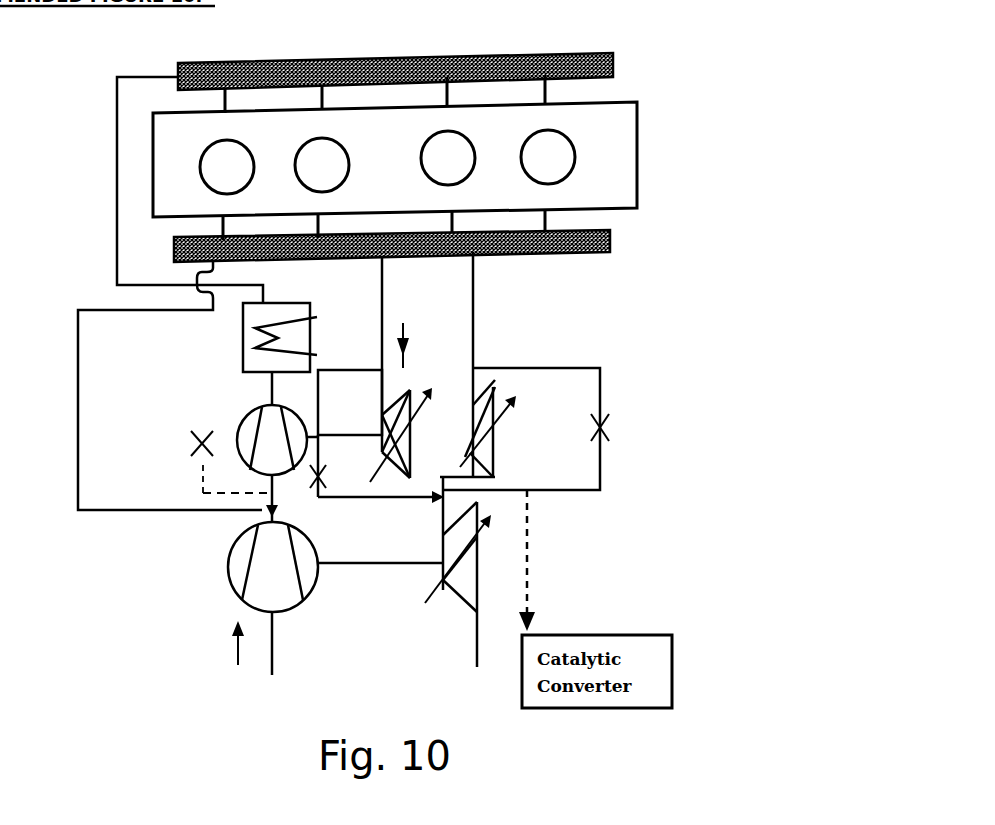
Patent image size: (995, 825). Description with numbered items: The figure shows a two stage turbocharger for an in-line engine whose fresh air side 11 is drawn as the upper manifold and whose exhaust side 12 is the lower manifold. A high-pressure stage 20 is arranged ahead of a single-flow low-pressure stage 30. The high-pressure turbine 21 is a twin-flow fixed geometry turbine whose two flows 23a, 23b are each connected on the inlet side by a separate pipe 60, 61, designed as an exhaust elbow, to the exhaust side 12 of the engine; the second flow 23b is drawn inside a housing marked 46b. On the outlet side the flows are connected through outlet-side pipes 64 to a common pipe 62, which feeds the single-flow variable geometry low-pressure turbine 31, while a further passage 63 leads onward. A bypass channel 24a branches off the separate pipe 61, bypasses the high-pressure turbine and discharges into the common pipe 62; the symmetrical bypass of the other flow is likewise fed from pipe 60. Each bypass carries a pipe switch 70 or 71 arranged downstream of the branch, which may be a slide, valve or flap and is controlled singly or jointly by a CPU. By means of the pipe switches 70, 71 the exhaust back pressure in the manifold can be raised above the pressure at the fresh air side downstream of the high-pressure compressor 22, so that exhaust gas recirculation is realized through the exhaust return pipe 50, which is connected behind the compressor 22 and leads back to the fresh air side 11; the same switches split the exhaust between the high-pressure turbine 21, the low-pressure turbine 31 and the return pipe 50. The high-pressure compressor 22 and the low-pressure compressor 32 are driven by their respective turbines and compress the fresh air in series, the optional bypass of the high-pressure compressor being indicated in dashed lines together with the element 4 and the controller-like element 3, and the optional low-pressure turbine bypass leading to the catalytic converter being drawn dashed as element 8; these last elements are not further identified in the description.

The controller 3 is at (262, 397).
The control valve 4 is at (188, 441).
The exhaust outlet to catalytic converter 8 is at (527, 565).
The fresh air side 11 is at (613, 63).
The exhaust side 12 is at (610, 237).
The high-pressure stage 20 is at (453, 403).
The high-pressure turbine 21 is at (462, 462).
The high-pressure compressor 22 is at (247, 470).
The first flow of the twin-flow high-pressure turbine 23a is at (374, 413).
The second flow of the twin-flow high-pressure turbine 23b is at (486, 415).
The bypass channel 24a is at (333, 366).
The low-pressure stage 30 is at (363, 593).
The low-pressure turbine 31 is at (477, 613).
The low-pressure compressor 32 is at (230, 593).
The turbine housing 46b is at (547, 364).
The exhaust return pipe 50 is at (78, 380).
The separate pipe 60 is at (473, 275).
The separate pipe 61 is at (380, 283).
The common pipe 62 is at (428, 504).
The exhaust passage 63 is at (341, 500).
The outlet-side pipes 64 is at (432, 470).
The pipe switch 70 is at (613, 427).
The pipe switch 71 is at (333, 473).